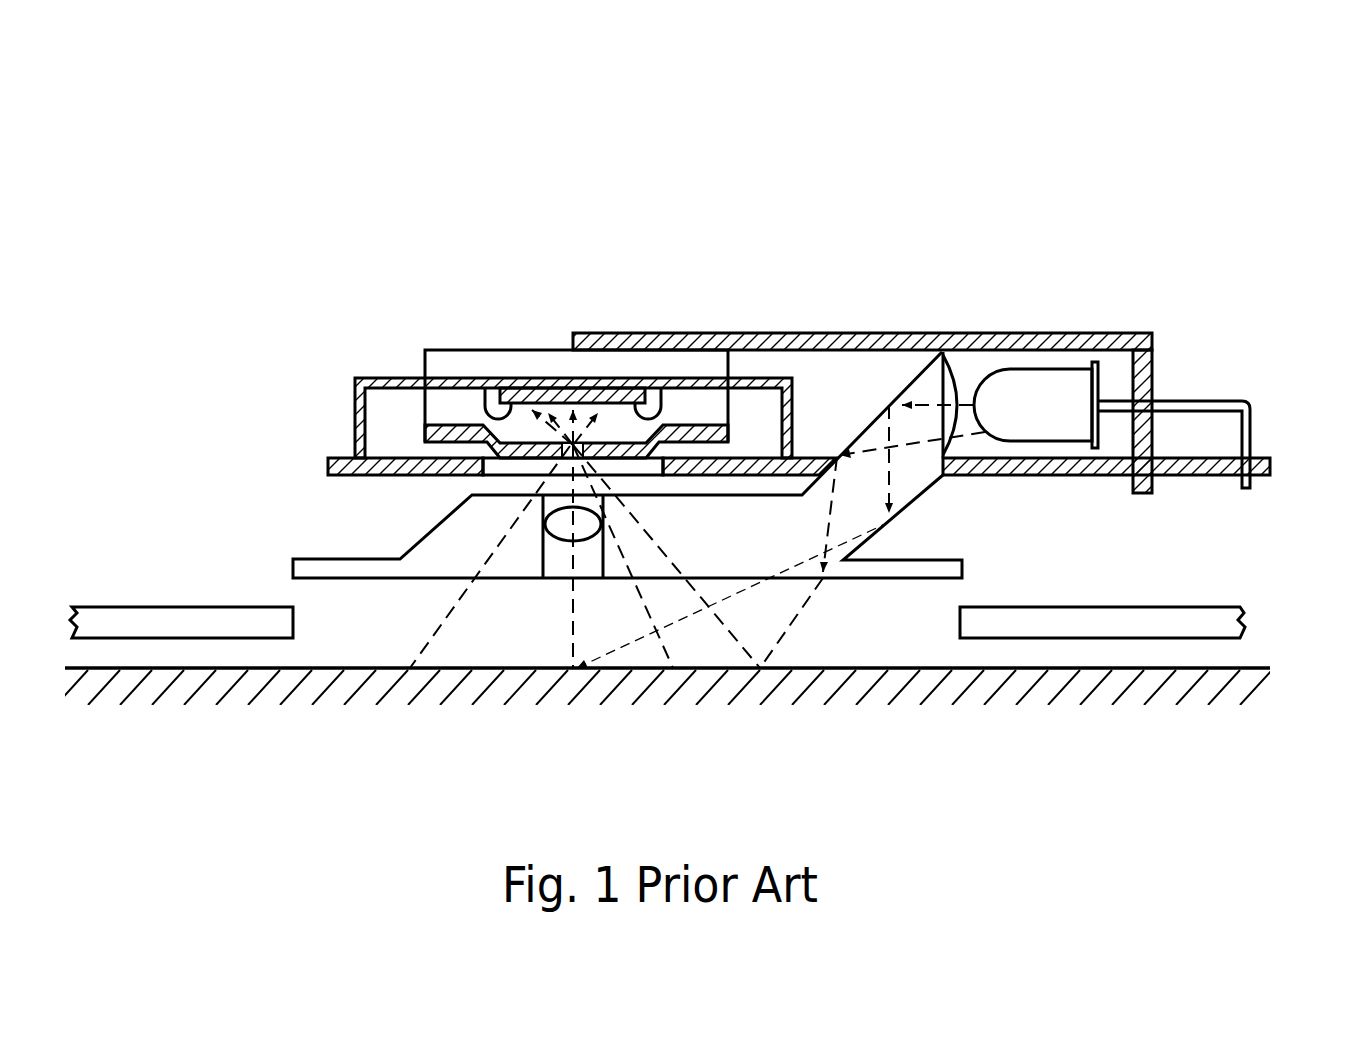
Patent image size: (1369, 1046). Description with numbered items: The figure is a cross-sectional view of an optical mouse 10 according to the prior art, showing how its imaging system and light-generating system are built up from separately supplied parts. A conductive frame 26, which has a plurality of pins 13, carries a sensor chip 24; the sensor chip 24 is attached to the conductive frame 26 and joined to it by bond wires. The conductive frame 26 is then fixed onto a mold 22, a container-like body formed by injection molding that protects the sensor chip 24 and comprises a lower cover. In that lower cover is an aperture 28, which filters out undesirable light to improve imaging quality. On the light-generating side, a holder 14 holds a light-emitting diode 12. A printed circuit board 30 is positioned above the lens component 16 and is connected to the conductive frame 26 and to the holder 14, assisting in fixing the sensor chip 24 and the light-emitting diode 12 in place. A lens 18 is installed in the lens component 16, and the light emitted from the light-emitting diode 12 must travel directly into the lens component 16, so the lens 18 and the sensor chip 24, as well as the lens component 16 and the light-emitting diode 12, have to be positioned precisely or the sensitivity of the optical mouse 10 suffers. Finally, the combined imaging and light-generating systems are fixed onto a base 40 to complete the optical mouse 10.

The optical mouse 10 is at (1120, 142).
The light-emitting diode 12 is at (1025, 395).
The pins 13 is at (355, 430).
The holder 14 is at (1085, 340).
The lens component 16 is at (317, 572).
The lens 18 is at (560, 523).
The mold 22 is at (733, 363).
The sensor chip 24 is at (522, 390).
The conductive frame 26 is at (572, 388).
The aperture 28 is at (425, 432).
The printed circuit board 30 is at (1280, 462).
The base 40 is at (1132, 617).